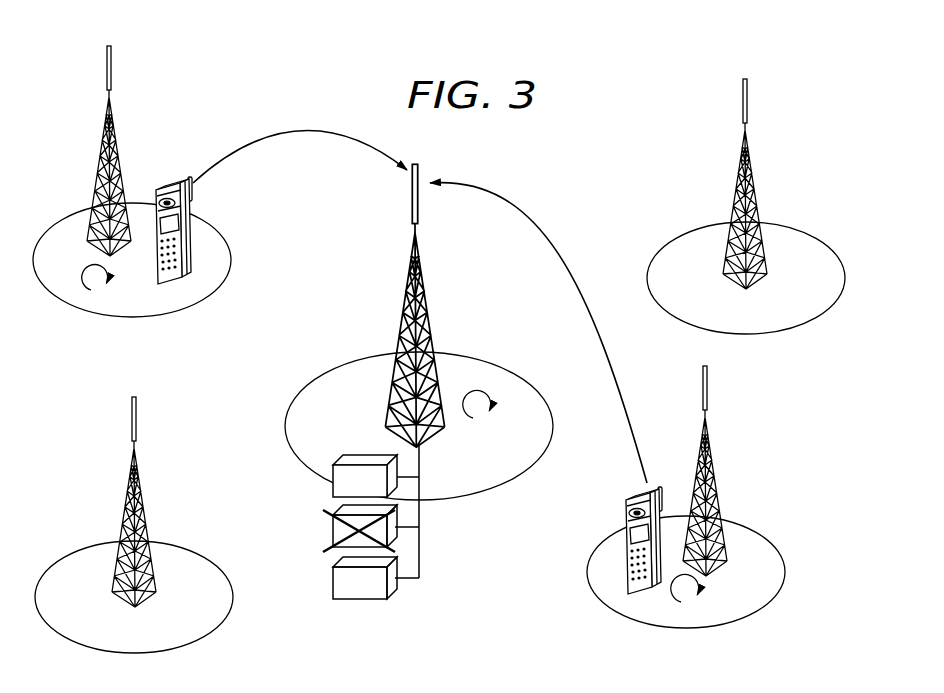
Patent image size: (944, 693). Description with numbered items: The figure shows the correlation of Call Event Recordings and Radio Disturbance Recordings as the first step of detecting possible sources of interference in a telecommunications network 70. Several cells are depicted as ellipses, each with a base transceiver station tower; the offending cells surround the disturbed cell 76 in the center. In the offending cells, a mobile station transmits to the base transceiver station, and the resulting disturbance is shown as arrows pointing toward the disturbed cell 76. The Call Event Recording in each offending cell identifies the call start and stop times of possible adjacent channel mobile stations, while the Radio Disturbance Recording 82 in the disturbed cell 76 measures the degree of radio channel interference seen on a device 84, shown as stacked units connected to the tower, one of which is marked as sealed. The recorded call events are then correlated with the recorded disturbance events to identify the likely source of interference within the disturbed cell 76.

The wireless communication system 70 is at (800, 80).
The disturbed cell 76 is at (316, 391).
The Radio Disturbance Recording (RDR) 82 is at (497, 440).
The device 84 is at (365, 599).